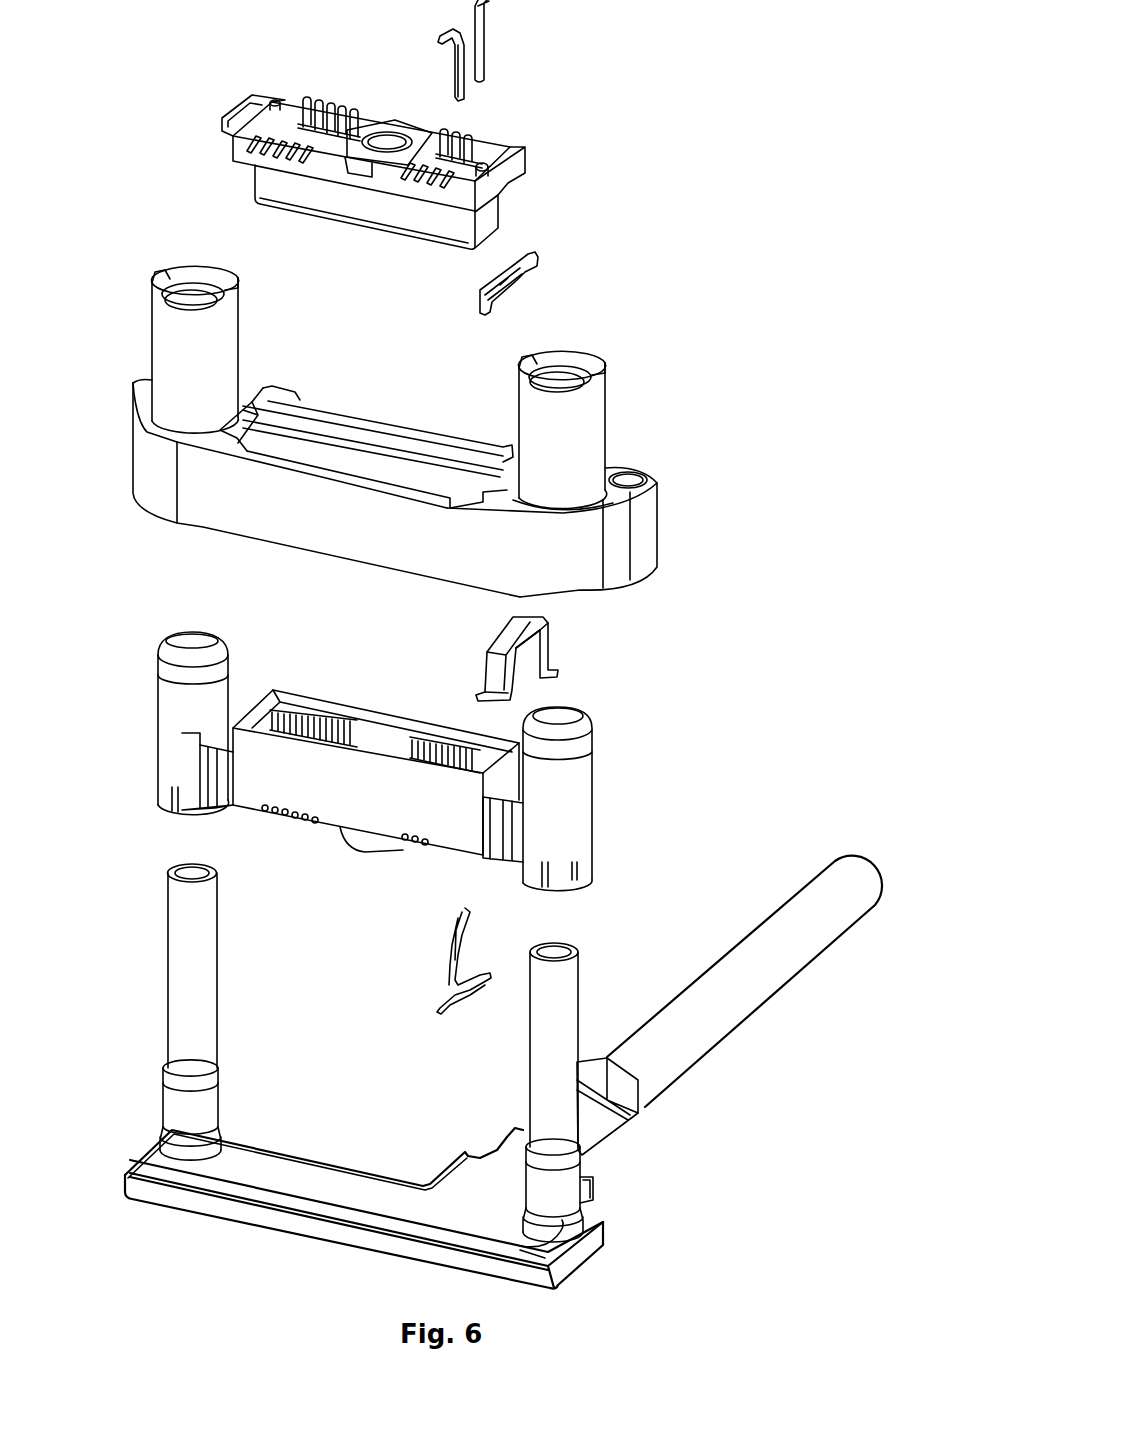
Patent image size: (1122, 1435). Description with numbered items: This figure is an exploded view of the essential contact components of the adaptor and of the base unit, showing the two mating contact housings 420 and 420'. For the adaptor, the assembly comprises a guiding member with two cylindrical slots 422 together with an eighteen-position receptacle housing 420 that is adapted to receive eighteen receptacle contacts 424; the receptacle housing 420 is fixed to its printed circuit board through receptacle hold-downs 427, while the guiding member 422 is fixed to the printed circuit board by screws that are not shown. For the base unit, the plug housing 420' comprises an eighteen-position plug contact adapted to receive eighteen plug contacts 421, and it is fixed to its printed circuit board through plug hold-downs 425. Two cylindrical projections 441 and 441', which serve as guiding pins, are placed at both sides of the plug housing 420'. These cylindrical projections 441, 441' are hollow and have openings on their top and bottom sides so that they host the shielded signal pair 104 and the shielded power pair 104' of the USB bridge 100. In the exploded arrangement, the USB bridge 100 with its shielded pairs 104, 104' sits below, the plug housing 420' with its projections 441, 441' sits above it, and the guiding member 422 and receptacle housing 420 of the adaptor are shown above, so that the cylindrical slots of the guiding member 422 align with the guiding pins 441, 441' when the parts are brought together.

The USB bridge 100 is at (606, 1174).
The shielded signal pair 104 is at (141, 1012).
The shielded power pair 104' is at (610, 1090).
The receptacle housing 420 is at (408, 172).
The plug housing 420' is at (352, 745).
The plug contacts 421 is at (477, 943).
The guiding member with two cylindrical slots 422 is at (302, 532).
The receptacle contacts 424 is at (483, 50).
The plug hold-downs 425 is at (493, 665).
The receptacle hold-downs 427 is at (535, 277).
The cylindrical projection 441 is at (158, 723).
The cylindrical projection 441' is at (598, 799).